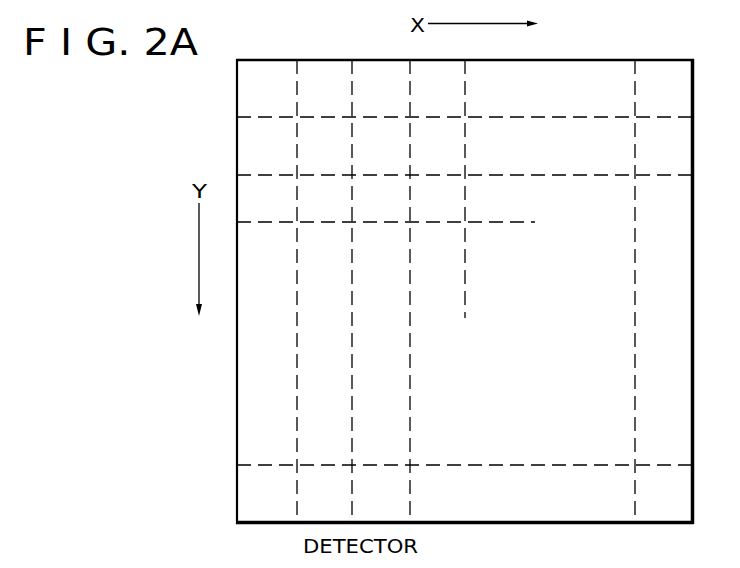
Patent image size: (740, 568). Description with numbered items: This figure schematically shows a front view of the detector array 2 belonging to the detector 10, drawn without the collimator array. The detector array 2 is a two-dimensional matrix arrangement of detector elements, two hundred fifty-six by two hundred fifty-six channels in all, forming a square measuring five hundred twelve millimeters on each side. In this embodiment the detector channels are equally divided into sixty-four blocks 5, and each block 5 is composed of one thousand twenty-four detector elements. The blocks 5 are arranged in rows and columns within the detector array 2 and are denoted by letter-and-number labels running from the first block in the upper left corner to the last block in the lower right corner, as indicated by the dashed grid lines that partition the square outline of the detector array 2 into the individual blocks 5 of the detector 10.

The detector array 2 is at (680, 336).
The detector 10 is at (643, 37).
The block 5 is at (283, 60).